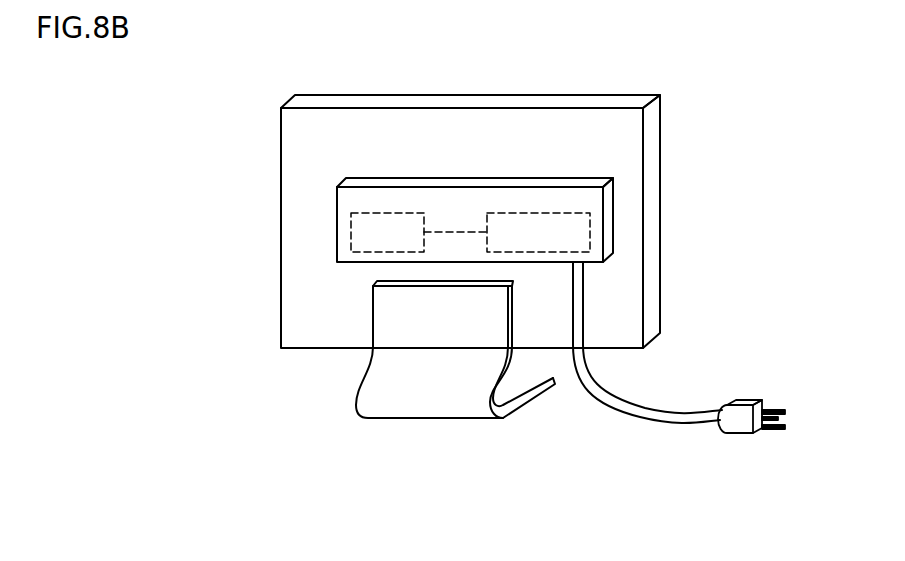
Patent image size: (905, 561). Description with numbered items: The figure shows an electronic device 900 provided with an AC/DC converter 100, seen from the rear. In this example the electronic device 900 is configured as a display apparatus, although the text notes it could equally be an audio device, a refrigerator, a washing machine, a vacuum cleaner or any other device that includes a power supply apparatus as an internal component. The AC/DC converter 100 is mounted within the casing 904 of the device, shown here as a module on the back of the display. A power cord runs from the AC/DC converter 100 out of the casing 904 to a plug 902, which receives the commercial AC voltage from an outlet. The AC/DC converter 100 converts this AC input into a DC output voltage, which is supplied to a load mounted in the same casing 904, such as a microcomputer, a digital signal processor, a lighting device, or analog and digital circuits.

The electronic device 900 is at (559, 266).
The casing 904 is at (528, 127).
The AC/DC converter 100 is at (573, 233).
The plug 902 is at (737, 428).